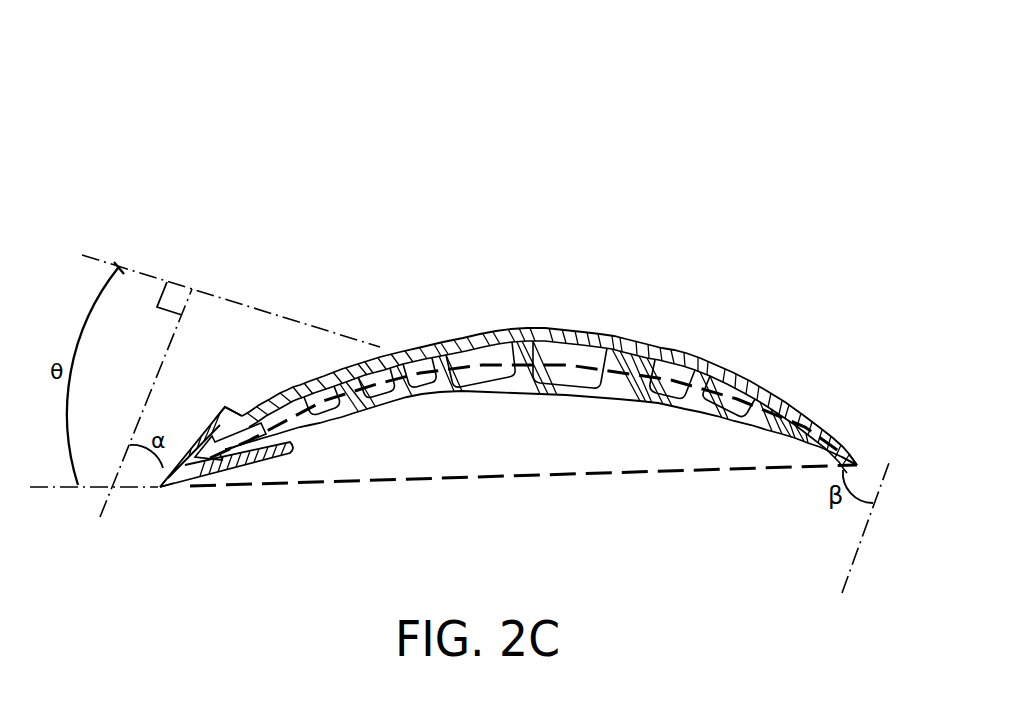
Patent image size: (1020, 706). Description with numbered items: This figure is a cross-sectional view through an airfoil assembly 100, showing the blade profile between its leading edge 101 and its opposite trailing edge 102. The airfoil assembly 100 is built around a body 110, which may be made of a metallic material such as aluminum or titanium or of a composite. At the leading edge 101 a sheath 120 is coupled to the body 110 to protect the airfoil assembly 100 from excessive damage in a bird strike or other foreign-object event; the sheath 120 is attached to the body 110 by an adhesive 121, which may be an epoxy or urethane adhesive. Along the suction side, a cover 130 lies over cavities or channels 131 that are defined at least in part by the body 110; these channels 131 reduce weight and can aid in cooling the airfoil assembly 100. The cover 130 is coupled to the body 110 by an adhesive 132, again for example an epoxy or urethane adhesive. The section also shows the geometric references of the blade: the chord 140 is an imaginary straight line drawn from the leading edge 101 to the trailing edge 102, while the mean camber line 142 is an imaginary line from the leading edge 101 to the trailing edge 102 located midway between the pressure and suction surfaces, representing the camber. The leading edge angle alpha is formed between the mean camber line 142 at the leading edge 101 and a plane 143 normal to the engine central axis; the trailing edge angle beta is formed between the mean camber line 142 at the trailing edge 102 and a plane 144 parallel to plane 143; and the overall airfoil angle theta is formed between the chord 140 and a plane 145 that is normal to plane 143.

The airfoil assembly 100 is at (619, 156).
The leading edge 101 is at (160, 490).
The trailing edge 102 is at (857, 462).
The body 110 is at (528, 385).
The sheath 120 is at (196, 485).
The adhesive 121 is at (230, 410).
The cover 130 is at (432, 335).
The channels 131 is at (560, 350).
The adhesive 132 is at (623, 353).
The chord 140 is at (625, 478).
The mean camber line 142 is at (401, 392).
The plane 143 is at (101, 513).
The plane 144 is at (852, 563).
The plane 145 is at (243, 302).